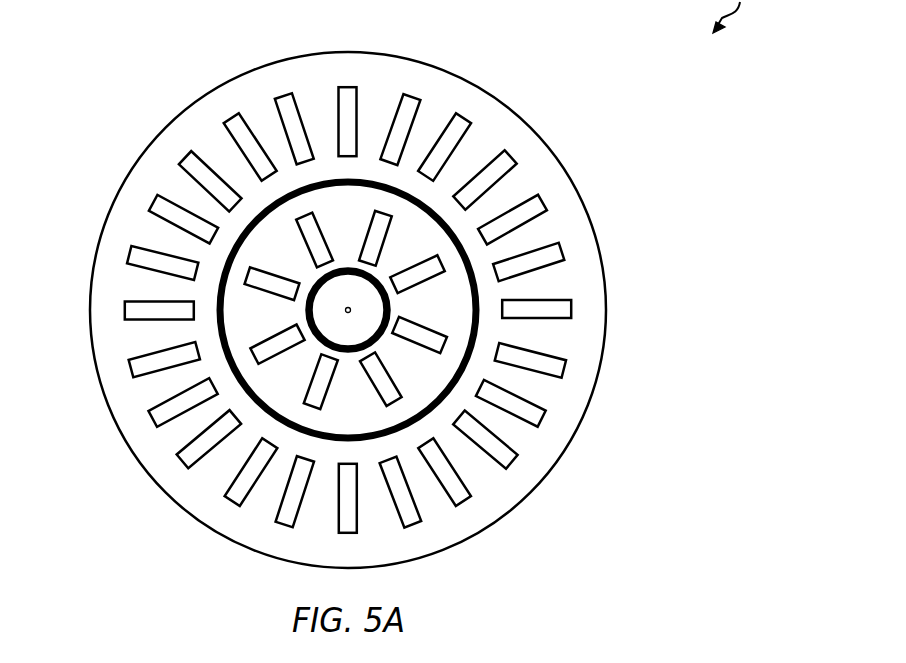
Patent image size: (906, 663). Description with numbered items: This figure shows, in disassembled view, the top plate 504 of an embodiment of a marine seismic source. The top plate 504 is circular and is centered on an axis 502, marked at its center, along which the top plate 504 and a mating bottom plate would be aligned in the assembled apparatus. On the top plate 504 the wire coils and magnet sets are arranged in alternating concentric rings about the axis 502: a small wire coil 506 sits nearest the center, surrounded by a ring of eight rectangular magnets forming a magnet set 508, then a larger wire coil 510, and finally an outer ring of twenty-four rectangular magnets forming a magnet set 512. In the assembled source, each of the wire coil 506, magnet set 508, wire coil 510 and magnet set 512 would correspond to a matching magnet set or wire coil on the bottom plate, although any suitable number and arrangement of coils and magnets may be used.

The axis 502 is at (348, 310).
The top plate 504 is at (183, 112).
The wire coil 506 is at (385, 323).
The magnet set 508 is at (265, 352).
The wire coil 510 is at (233, 262).
The magnet set 512 is at (348, 92).